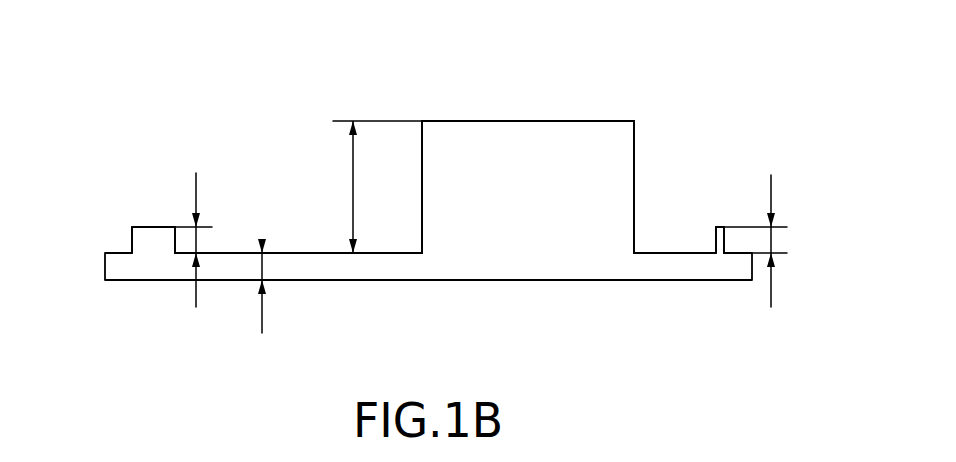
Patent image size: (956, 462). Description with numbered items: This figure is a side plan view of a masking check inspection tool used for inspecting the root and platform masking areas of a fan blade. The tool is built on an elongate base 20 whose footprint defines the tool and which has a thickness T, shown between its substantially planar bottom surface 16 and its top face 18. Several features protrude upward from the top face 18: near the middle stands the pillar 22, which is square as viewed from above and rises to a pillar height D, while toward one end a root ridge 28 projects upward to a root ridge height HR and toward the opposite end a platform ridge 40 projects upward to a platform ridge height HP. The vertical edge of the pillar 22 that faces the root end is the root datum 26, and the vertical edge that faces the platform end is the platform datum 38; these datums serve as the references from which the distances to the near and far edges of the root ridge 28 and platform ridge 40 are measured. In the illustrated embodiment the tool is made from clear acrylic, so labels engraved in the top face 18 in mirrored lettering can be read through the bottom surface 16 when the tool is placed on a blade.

The bottom surface 16 is at (541, 295).
The top face 18 is at (504, 103).
The base 20 is at (322, 262).
The pillar 22 is at (535, 135).
The root datum 26 is at (422, 187).
The root ridge 28 is at (155, 227).
The platform datum 38 is at (634, 147).
The platform ridge 40 is at (720, 226).
The root ridge height HR is at (197, 240).
The platform ridge height HP is at (771, 241).
The pillar height D is at (377, 187).
The thickness T is at (262, 320).